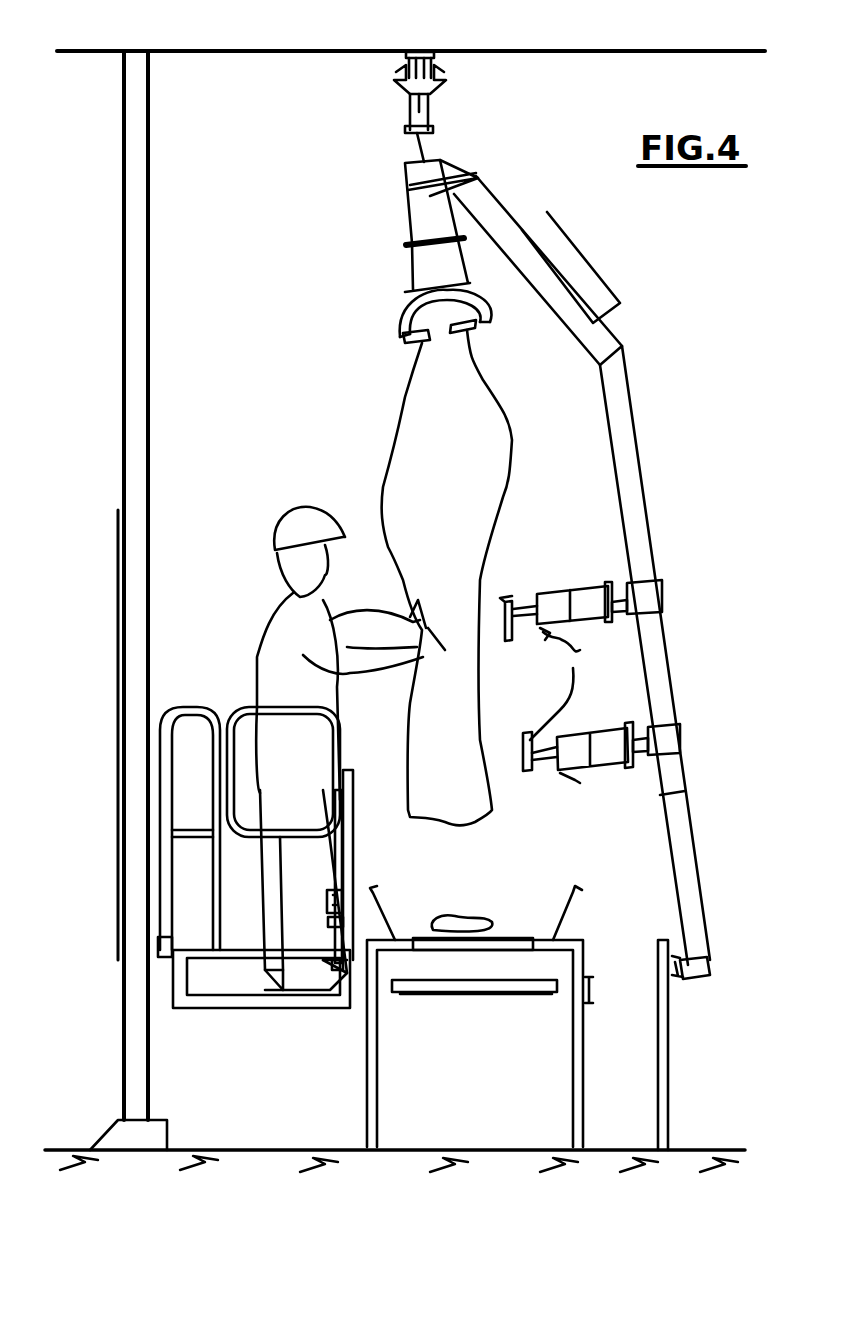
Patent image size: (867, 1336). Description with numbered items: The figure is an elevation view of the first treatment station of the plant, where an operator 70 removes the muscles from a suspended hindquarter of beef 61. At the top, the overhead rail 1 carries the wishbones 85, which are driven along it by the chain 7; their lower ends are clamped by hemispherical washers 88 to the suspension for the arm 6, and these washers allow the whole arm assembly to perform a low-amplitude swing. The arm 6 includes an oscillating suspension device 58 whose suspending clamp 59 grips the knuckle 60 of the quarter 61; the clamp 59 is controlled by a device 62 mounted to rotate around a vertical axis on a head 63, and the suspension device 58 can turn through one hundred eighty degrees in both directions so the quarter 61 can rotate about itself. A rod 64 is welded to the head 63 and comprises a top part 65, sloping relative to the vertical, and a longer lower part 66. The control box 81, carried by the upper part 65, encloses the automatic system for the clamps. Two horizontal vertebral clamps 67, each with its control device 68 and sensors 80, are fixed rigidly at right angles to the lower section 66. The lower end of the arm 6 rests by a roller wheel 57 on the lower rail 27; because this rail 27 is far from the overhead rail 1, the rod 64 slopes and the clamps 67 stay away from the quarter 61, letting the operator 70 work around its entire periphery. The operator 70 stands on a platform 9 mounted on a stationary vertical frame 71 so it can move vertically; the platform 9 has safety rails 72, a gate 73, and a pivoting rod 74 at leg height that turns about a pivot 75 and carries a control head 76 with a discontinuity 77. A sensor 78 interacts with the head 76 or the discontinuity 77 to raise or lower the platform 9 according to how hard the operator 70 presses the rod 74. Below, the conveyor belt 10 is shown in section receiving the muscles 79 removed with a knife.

The overhead rail 1 is at (420, 51).
The wishbone 85 is at (446, 78).
The chain 7 is at (430, 100).
The hemispherical washer 88 is at (412, 116).
The head 63 is at (455, 170).
The top part of rod 65 is at (500, 212).
The control box 81 is at (572, 266).
The oscillating suspension device 58 is at (390, 223).
The control device 62 is at (420, 236).
The suspending clamp 59 is at (386, 323).
The knuckle 60 is at (440, 367).
The hindquarter of beef 61 is at (508, 536).
The arm 6 is at (641, 341).
The rod 64 is at (643, 388).
The lower part of rod 66 is at (625, 455).
The clamp control device 68 is at (587, 600).
The sensor 80 is at (580, 650).
The vertebral clamp 67 is at (522, 733).
The stationary vertical frame 71 is at (124, 392).
The operator 70 is at (287, 618).
The safety rail 72 is at (195, 707).
The gate 73 is at (345, 722).
The pivoting rod 74 is at (345, 840).
The discontinuity 77 is at (338, 890).
The sensor 78 is at (345, 900).
The control head 76 is at (345, 922).
The muscles 79 is at (462, 926).
The conveyor belt 10 is at (512, 936).
The platform 9 is at (237, 978).
The pivot 75 is at (343, 985).
The roller wheel 57 is at (680, 978).
The rail 27 is at (676, 985).